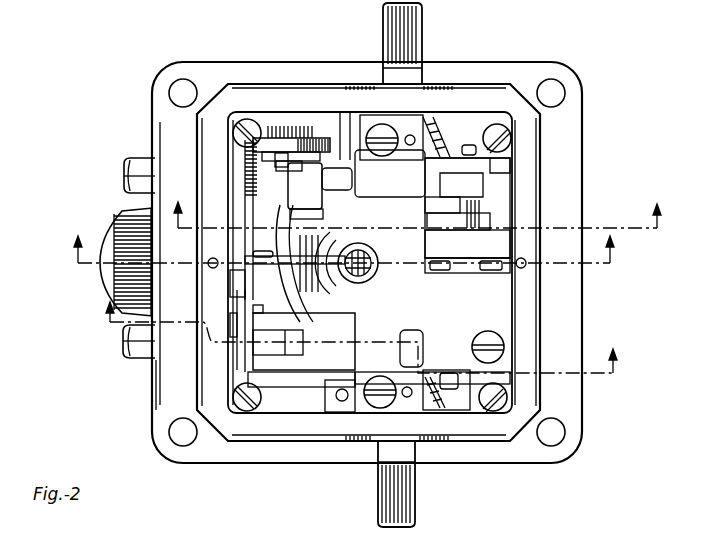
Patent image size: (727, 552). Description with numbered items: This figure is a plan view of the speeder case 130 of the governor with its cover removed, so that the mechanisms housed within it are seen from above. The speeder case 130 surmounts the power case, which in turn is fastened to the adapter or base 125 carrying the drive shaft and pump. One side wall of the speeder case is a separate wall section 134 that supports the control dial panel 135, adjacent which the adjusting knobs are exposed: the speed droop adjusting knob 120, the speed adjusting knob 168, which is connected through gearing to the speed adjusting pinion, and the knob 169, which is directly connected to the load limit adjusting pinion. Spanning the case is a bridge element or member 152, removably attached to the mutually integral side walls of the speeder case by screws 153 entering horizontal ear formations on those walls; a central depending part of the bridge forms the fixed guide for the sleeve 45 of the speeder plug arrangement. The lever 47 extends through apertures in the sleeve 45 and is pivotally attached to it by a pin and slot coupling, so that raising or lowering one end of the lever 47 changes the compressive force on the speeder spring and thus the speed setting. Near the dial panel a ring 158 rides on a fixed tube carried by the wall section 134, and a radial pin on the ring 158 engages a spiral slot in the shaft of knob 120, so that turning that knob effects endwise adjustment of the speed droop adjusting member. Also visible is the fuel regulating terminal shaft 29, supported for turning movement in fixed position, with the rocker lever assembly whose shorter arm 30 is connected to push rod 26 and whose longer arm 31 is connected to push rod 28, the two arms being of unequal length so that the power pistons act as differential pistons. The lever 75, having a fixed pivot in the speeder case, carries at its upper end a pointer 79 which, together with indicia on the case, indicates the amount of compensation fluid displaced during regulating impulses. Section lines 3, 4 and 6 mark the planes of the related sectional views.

The section line 3- 3 is at (342, 265).
The section line 4- 4 is at (361, 350).
The section line 6- 6 is at (418, 228).
The push rod 26 is at (480, 190).
The push rod 28 is at (280, 351).
The fuel regulating terminal shaft 29 is at (412, 38).
The shorter arm 30 is at (493, 172).
The longer arm 31 is at (340, 358).
The sleeve 45 is at (372, 279).
The lever 47 is at (268, 262).
The lever 75 is at (273, 136).
The pointer 79 is at (302, 131).
The speed droop adjusting knob 120 is at (126, 165).
The adapter or base 125 is at (493, 457).
The speeder case 130 is at (240, 96).
The wall section 134 is at (188, 370).
The control dial panel 135 is at (158, 372).
The bridge element or member 152 is at (403, 224).
The screws 153 is at (384, 130).
The ring 158 is at (319, 200).
The speed adjusting knob 168 is at (122, 304).
The knob 169 is at (125, 350).